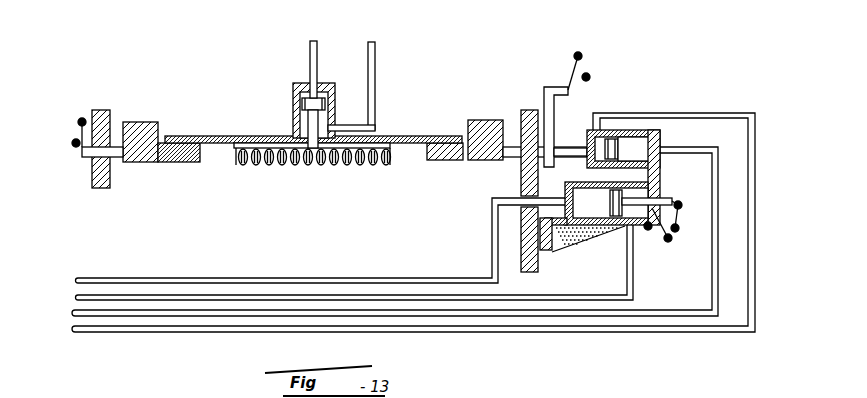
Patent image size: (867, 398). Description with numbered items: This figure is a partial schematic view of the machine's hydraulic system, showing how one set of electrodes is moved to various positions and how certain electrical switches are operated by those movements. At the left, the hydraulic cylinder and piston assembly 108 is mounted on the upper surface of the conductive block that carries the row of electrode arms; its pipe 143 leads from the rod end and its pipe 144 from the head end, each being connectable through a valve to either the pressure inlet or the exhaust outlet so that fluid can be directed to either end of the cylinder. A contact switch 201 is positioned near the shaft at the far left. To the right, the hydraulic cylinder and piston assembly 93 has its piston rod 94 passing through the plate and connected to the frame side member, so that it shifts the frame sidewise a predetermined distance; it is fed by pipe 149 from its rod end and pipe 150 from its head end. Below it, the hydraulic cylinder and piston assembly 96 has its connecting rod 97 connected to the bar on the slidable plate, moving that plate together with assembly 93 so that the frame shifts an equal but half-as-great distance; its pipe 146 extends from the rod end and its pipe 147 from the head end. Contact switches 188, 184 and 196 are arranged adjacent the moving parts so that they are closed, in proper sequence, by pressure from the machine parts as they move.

The contact switch 201 is at (79, 122).
The hydraulic cylinder and piston assembly 108 is at (293, 90).
The pipe 144 is at (318, 50).
The pipe 143 is at (376, 76).
The contact switch 188 is at (575, 57).
The piston rod 94 is at (571, 148).
The hydraulic cylinder and piston assembly 93 is at (661, 139).
The hydraulic cylinder and piston assembly 96 is at (585, 182).
The connecting rod 97 is at (658, 186).
The contact switch 184 is at (678, 223).
The contact switch 196 is at (656, 241).
The pipe 147 is at (76, 278).
The pipe 146 is at (76, 295).
The pipe 150 is at (73, 310).
The pipe 149 is at (73, 327).